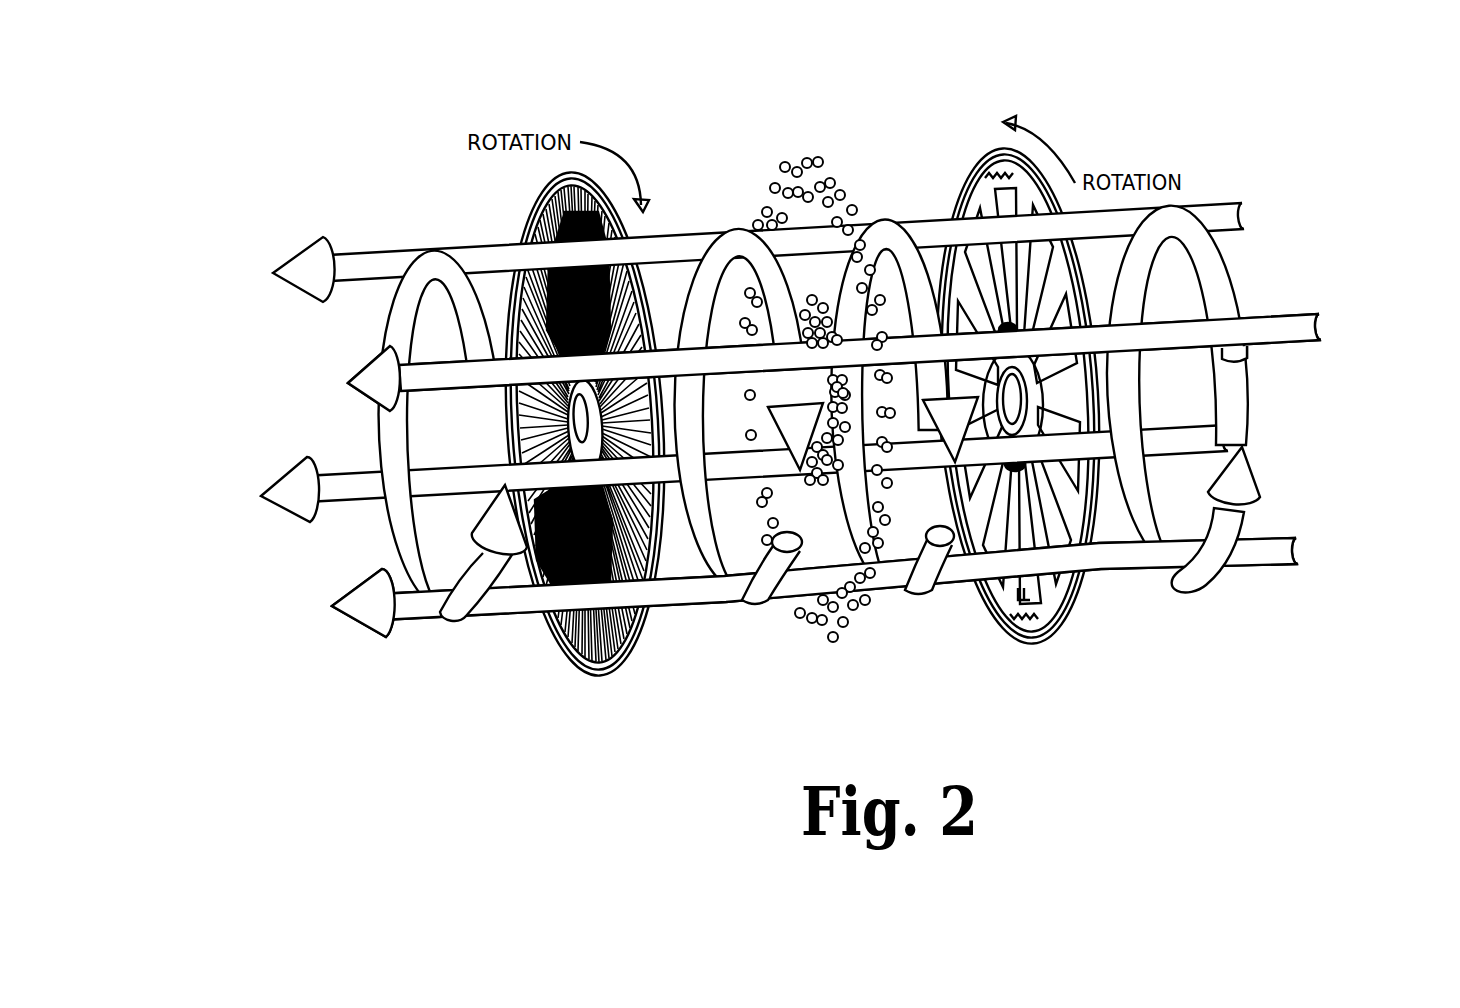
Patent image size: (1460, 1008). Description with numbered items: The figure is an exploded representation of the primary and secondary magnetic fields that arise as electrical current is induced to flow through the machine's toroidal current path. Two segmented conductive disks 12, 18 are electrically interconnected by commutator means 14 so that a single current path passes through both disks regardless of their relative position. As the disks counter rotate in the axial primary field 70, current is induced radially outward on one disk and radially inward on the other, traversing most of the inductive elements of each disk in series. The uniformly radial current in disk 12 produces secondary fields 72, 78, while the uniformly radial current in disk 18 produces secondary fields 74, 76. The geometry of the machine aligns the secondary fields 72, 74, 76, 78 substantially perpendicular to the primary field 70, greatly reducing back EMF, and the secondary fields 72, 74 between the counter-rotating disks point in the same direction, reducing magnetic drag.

The segmented conductive disk 12 is at (597, 672).
The commutator means 14 is at (810, 158).
The segmented conductive disk 18 is at (1033, 650).
The axial primary field 70 is at (372, 626).
The secondary field 72 is at (730, 222).
The secondary field 74 is at (900, 218).
The secondary field 76 is at (1253, 482).
The secondary field 78 is at (457, 630).